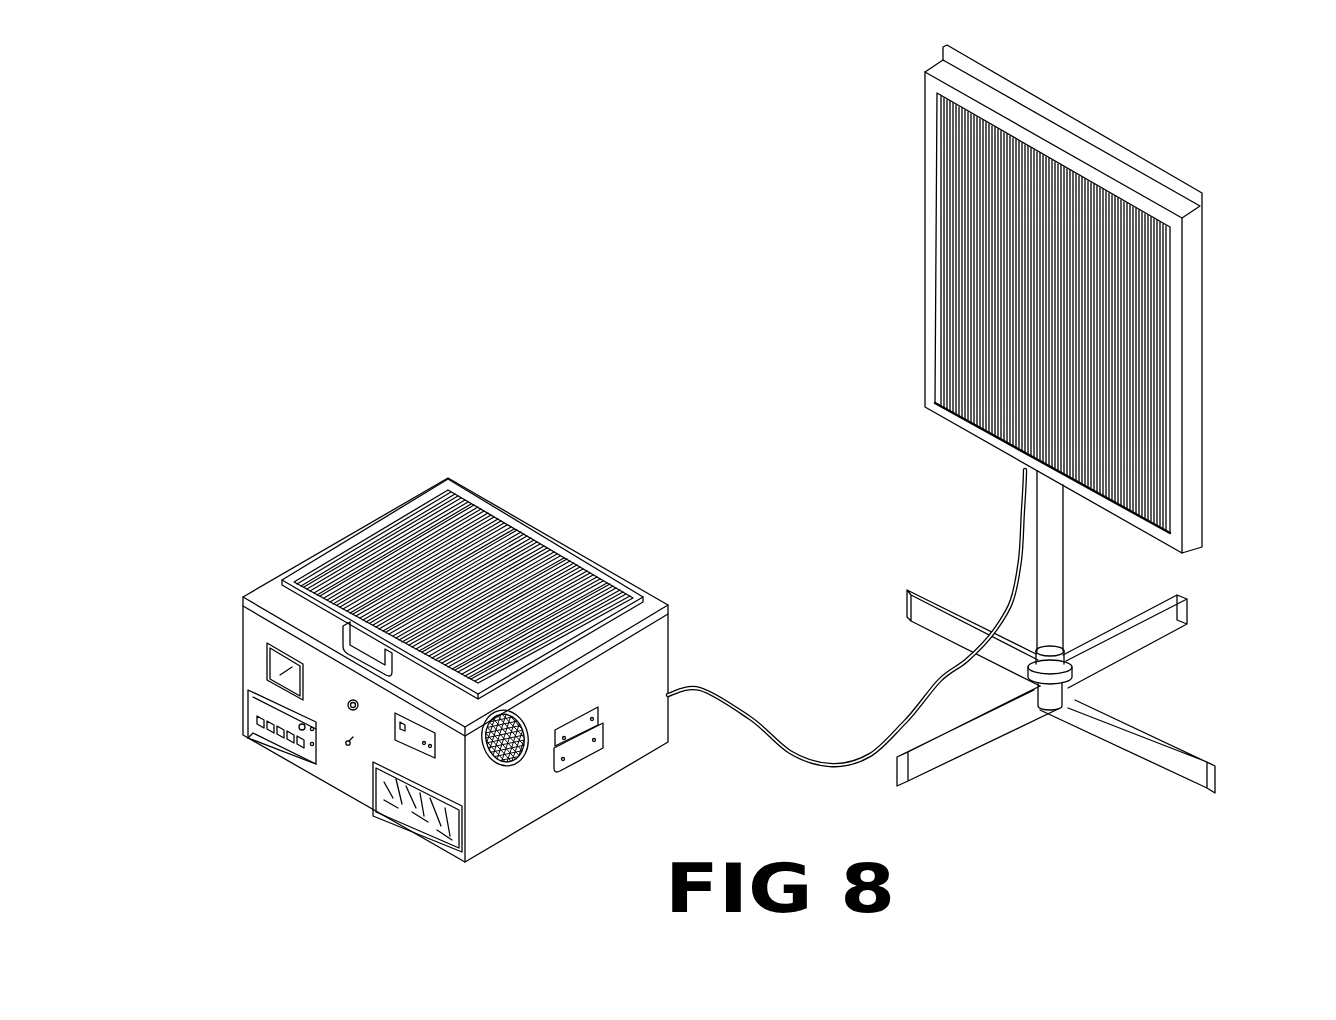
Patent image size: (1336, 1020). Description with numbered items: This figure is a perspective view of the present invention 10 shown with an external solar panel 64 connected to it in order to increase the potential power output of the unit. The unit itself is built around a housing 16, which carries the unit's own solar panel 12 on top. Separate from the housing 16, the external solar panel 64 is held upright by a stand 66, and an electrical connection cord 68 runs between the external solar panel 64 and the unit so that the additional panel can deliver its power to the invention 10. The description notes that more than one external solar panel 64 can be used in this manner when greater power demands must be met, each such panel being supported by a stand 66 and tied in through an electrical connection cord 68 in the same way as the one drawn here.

The present invention 10 is at (497, 427).
The solar panel 12 is at (367, 533).
The housing 16 is at (242, 667).
The external solar panel 64 is at (937, 232).
The stand 66 is at (1060, 572).
The electrical connection cord 68 is at (1017, 557).